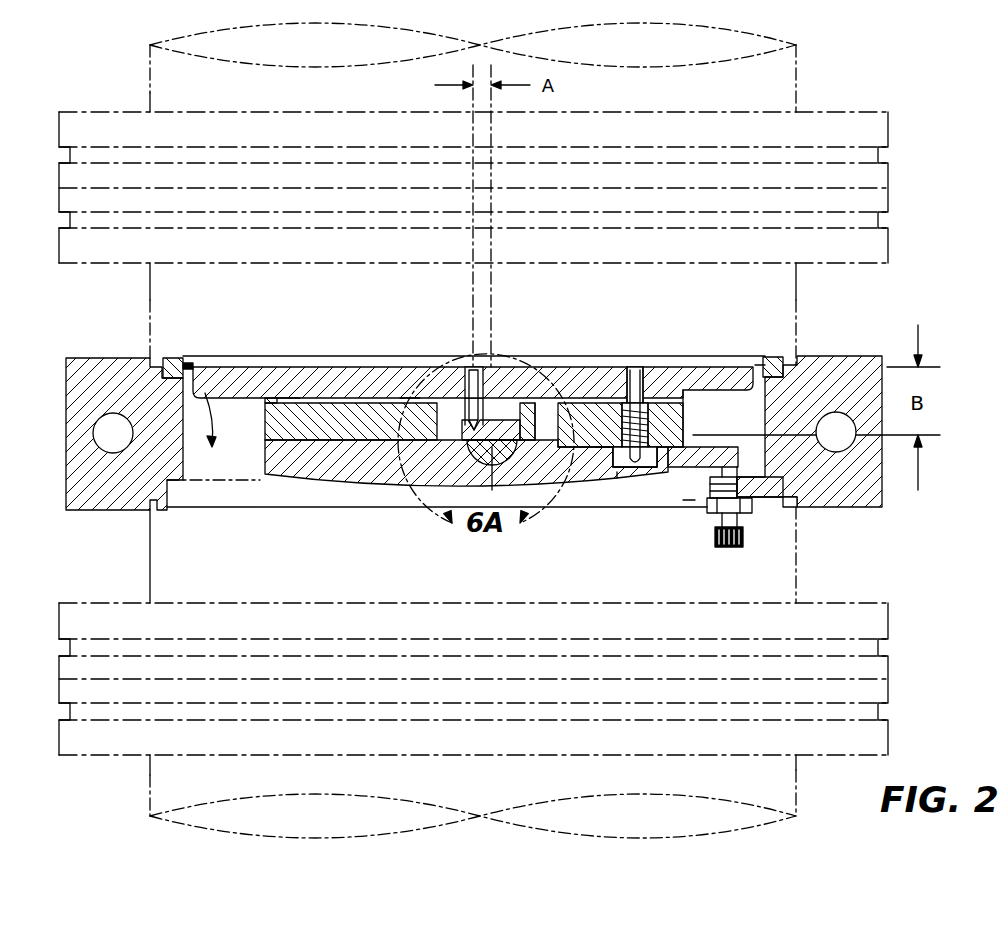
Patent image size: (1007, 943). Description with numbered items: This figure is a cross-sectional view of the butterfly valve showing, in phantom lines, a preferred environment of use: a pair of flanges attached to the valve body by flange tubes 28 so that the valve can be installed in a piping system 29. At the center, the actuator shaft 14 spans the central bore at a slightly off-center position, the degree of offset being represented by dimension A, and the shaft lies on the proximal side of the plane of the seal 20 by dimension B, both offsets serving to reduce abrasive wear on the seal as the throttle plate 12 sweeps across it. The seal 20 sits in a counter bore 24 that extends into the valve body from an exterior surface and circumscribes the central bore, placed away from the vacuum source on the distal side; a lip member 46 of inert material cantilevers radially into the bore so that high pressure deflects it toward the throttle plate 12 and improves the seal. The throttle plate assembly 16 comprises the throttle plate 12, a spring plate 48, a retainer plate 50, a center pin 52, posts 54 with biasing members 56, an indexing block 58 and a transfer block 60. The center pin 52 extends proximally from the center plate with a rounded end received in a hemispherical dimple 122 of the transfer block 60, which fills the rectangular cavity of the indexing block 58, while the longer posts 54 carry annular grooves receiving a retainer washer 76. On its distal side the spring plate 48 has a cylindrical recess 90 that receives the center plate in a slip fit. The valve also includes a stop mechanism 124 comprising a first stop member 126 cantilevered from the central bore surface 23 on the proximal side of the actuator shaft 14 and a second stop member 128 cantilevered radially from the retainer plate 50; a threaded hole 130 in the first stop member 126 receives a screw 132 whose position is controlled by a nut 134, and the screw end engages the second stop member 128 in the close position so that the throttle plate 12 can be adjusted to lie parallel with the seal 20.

The throttle plate 12 is at (381, 380).
The actuator shaft 14 is at (540, 468).
The throttle plate assembly 16 is at (851, 358).
The seal 20 is at (775, 357).
The central bore surface 23 is at (186, 468).
The counter bore 24 is at (172, 363).
The flange tubes 28 is at (880, 195).
The piping system 29 is at (165, 72).
The lip member 46 is at (757, 364).
The spring plate 48 is at (330, 420).
The retainer plate 50 is at (297, 470).
The center pin 52 is at (456, 367).
The posts 54 is at (640, 367).
The biasing members 56 is at (602, 447).
The indexing block 58 is at (561, 400).
The transfer block 60 is at (499, 420).
The retainer washer 76 is at (617, 480).
The cylindrical recess 90 is at (290, 395).
The hemispherical dimple 122 is at (410, 398).
The stop mechanism 124 is at (684, 500).
The first stop member 126 is at (777, 483).
The second stop member 128 is at (718, 447).
The threaded hole 130 is at (711, 489).
The screw 132 is at (742, 547).
The nut 134 is at (750, 507).